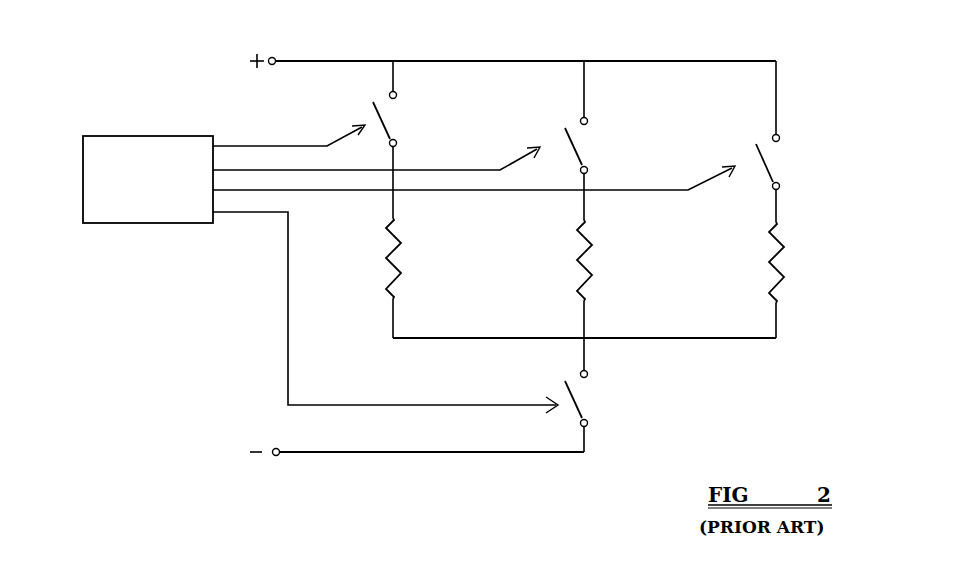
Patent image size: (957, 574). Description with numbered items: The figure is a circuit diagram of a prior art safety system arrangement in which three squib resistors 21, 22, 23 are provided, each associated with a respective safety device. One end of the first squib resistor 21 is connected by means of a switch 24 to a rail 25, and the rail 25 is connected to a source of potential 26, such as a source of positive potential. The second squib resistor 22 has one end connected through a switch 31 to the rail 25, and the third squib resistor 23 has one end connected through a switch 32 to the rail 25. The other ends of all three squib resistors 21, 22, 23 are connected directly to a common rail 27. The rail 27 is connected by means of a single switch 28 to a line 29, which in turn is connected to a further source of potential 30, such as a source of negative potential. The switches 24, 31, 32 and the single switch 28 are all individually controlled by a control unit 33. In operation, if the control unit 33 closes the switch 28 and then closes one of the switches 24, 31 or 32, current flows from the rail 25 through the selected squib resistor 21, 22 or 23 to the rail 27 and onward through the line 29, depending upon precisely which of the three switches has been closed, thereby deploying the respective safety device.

The squib resistor 21 is at (389, 258).
The squib resistor 22 is at (583, 258).
The squib resistor 23 is at (781, 258).
The switch 24 is at (383, 120).
The rail 25 is at (503, 61).
The source of potential 26 is at (328, 61).
The rail 27 is at (703, 340).
The single switch 28 is at (583, 402).
The line 29 is at (463, 452).
The further source of potential 30 is at (277, 455).
The switch 31 is at (583, 162).
The switch 32 is at (770, 165).
The control unit 33 is at (176, 224).